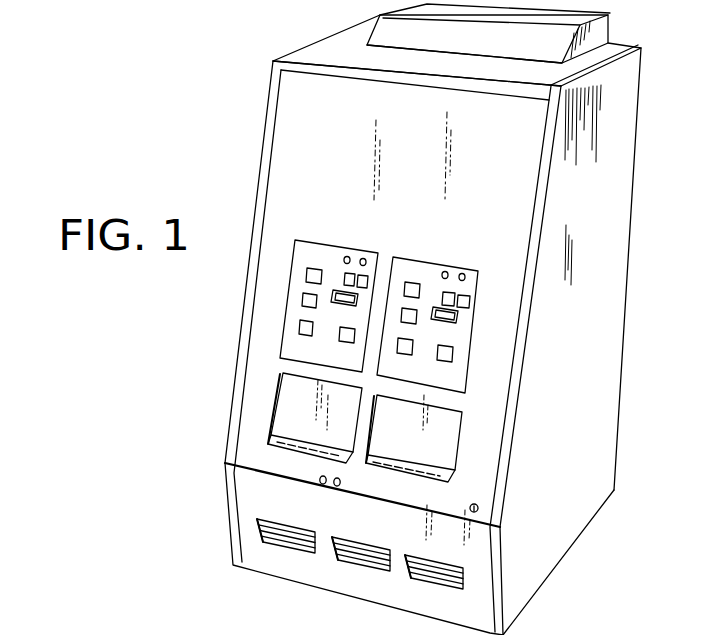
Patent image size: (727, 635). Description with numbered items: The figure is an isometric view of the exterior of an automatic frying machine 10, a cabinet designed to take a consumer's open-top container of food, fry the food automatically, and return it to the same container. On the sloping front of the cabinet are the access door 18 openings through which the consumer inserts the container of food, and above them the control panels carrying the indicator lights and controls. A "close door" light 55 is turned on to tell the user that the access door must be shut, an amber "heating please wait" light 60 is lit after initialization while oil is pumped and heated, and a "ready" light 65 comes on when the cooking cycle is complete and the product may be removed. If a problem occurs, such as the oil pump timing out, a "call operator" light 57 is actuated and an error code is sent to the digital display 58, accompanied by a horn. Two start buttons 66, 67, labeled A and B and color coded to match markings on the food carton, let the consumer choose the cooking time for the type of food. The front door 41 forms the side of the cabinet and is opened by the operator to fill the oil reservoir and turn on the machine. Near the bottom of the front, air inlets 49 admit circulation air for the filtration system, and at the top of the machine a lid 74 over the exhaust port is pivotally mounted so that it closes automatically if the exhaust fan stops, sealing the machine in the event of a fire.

The automatic frying machine 10 is at (220, 131).
The access door 18 is at (288, 412).
The front door 41 is at (510, 197).
The air inlets 49 is at (410, 577).
The close door light 55 is at (444, 271).
The call operator light 57 is at (323, 485).
The digital display 58 is at (449, 321).
The heating please wait light 60 is at (337, 487).
The ready light 65 is at (463, 273).
The start button A 66 is at (456, 290).
The start button B 67 is at (469, 302).
The lid 74 is at (558, 562).